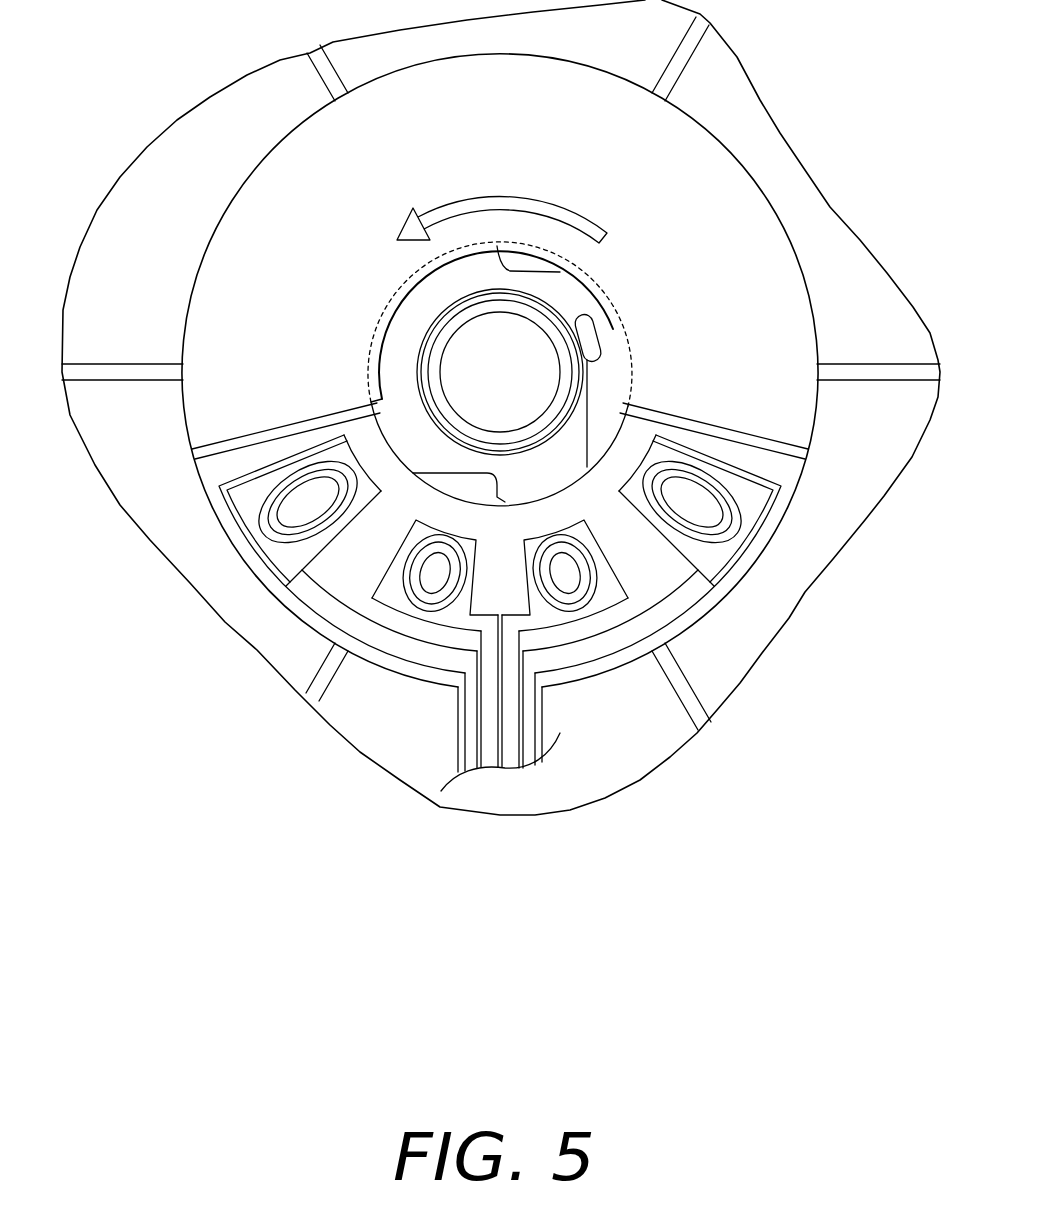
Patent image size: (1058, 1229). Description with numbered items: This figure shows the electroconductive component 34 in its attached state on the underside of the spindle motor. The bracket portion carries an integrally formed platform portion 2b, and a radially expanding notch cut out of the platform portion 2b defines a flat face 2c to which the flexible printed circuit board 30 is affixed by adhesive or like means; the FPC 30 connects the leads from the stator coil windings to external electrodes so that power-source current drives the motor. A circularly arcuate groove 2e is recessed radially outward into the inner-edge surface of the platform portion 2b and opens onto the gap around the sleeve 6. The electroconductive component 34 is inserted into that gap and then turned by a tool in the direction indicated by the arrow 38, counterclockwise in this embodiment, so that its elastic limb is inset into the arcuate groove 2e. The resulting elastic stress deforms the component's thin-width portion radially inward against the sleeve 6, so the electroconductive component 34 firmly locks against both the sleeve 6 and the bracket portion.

The platform portion 2b is at (723, 276).
The flat face 2c is at (320, 434).
The circularly arcuate groove 2e is at (612, 356).
The sleeve 6 is at (452, 321).
The flexible printed circuit board 30 is at (620, 531).
The electroconductive component 34 is at (398, 352).
The arrow 38 is at (502, 185).